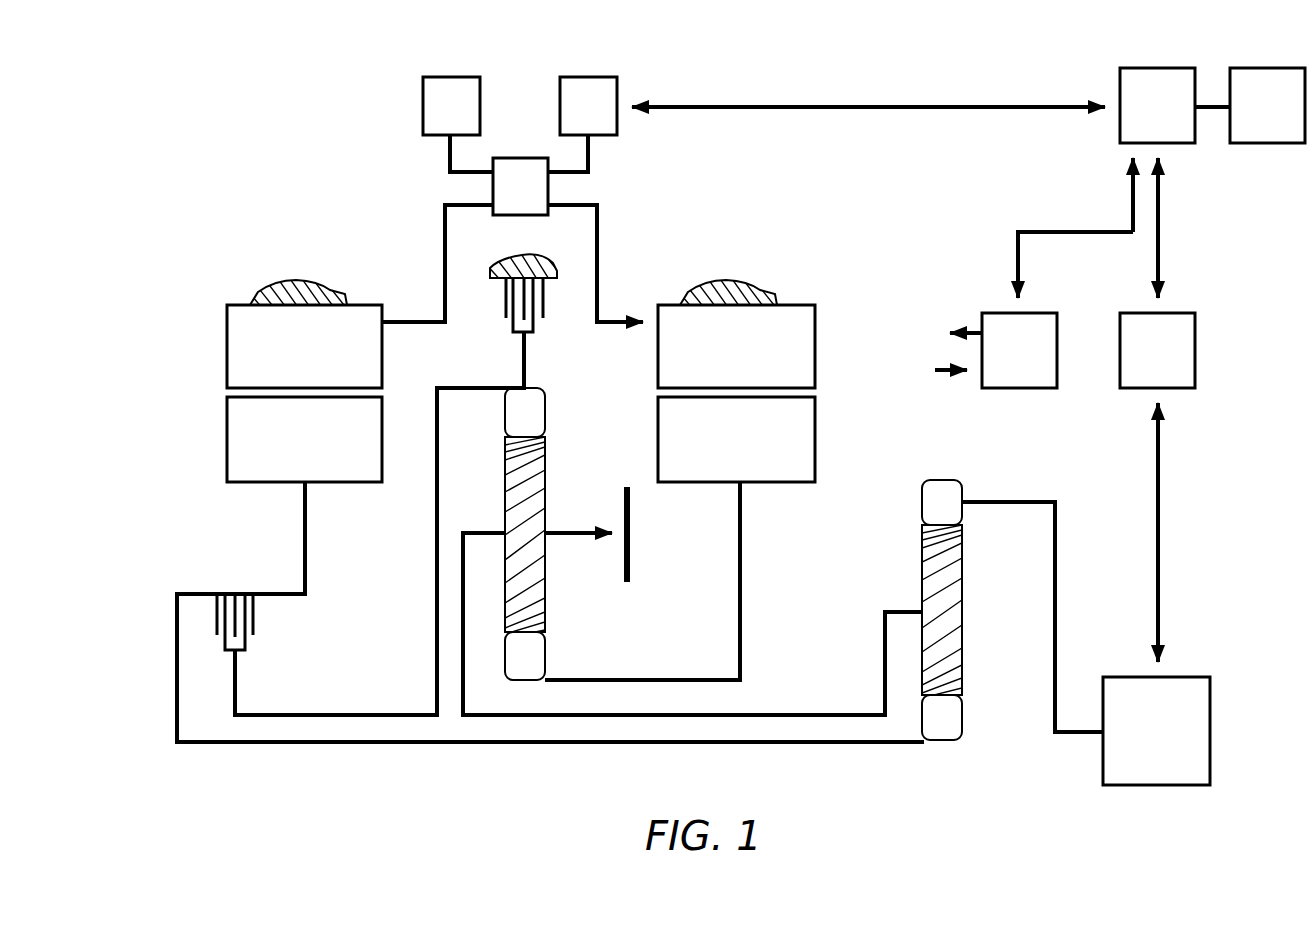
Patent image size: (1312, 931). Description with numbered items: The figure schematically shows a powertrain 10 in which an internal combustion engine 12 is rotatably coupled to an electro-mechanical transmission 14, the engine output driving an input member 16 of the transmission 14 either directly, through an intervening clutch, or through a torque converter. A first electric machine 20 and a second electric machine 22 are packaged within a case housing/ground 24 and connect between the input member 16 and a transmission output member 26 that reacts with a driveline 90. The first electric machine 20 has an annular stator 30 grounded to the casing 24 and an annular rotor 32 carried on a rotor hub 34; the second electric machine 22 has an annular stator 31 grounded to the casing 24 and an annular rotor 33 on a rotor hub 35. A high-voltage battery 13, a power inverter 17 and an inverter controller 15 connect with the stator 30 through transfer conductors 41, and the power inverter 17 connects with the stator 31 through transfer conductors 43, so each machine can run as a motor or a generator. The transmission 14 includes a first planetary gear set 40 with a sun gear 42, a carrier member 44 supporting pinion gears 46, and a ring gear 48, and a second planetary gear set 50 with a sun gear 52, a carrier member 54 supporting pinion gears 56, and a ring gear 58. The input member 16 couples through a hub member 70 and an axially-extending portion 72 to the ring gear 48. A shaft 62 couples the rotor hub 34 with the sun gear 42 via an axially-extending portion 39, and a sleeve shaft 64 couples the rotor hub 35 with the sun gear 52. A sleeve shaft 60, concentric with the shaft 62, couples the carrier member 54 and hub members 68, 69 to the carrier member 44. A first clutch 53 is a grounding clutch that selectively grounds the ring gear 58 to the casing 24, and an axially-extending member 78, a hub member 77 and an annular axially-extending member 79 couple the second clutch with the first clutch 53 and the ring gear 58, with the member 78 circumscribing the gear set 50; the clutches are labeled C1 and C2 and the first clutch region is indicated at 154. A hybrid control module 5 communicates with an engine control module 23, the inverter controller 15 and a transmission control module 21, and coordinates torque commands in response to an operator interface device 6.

The hybrid control module 5 is at (913, 183).
The operator interface device 6 is at (1250, 105).
The powertrain 10 is at (866, 290).
The internal combustion engine 12 is at (1156, 731).
The high-voltage battery 13 is at (451, 106).
The electro-mechanical transmission 14 is at (198, 286).
The inverter controller 15 is at (588, 106).
The input member 16 is at (1065, 740).
The power inverter 17 is at (519, 175).
The first electric machine 20 is at (198, 406).
The transmission control module 21 is at (1034, 310).
The second electric machine 22 is at (830, 386).
The engine control module 23 is at (1157, 487).
The case housing/ground 24 is at (293, 280).
The transmission output member 26 is at (600, 537).
The annular stator 30 is at (304, 346).
The annular stator 31 is at (736, 346).
The annular rotor 32 is at (304, 439).
The annular rotor 33 is at (736, 439).
The rotor hub 34 is at (300, 556).
The rotor hub 35 is at (742, 540).
The axially-extending portion 39 is at (192, 592).
The first planetary gear set 40 is at (980, 584).
The transfer conductors 41 is at (420, 320).
The sun gear 42 is at (964, 722).
The transfer conductors 43 is at (600, 272).
The carrier member 44 is at (900, 610).
The pinion gears 46 is at (964, 570).
The ring gear 48 is at (940, 478).
The second planetary gear set 50 is at (573, 534).
The sun gear 52 is at (547, 656).
The first clutch 53 is at (272, 647).
The carrier member 54 is at (488, 531).
The pinion gears 56 is at (547, 478).
The ring gear 58 is at (547, 414).
The sleeve shaft 60 is at (800, 713).
The shaft 62 is at (550, 744).
The sleeve shaft 64 is at (738, 678).
The hub member 68 is at (461, 580).
The hub member 69 is at (883, 640).
The hub member 70 is at (1057, 590).
The axially-extending portion 72 is at (990, 500).
The hub member 77 is at (435, 540).
The axially-extending member 78 is at (488, 386).
The axially-extending member 79 is at (372, 713).
The driveline 90 is at (632, 525).
The first clutch 154 is at (561, 321).
The clutch C1 is at (552, 316).
The clutch C2 is at (262, 642).